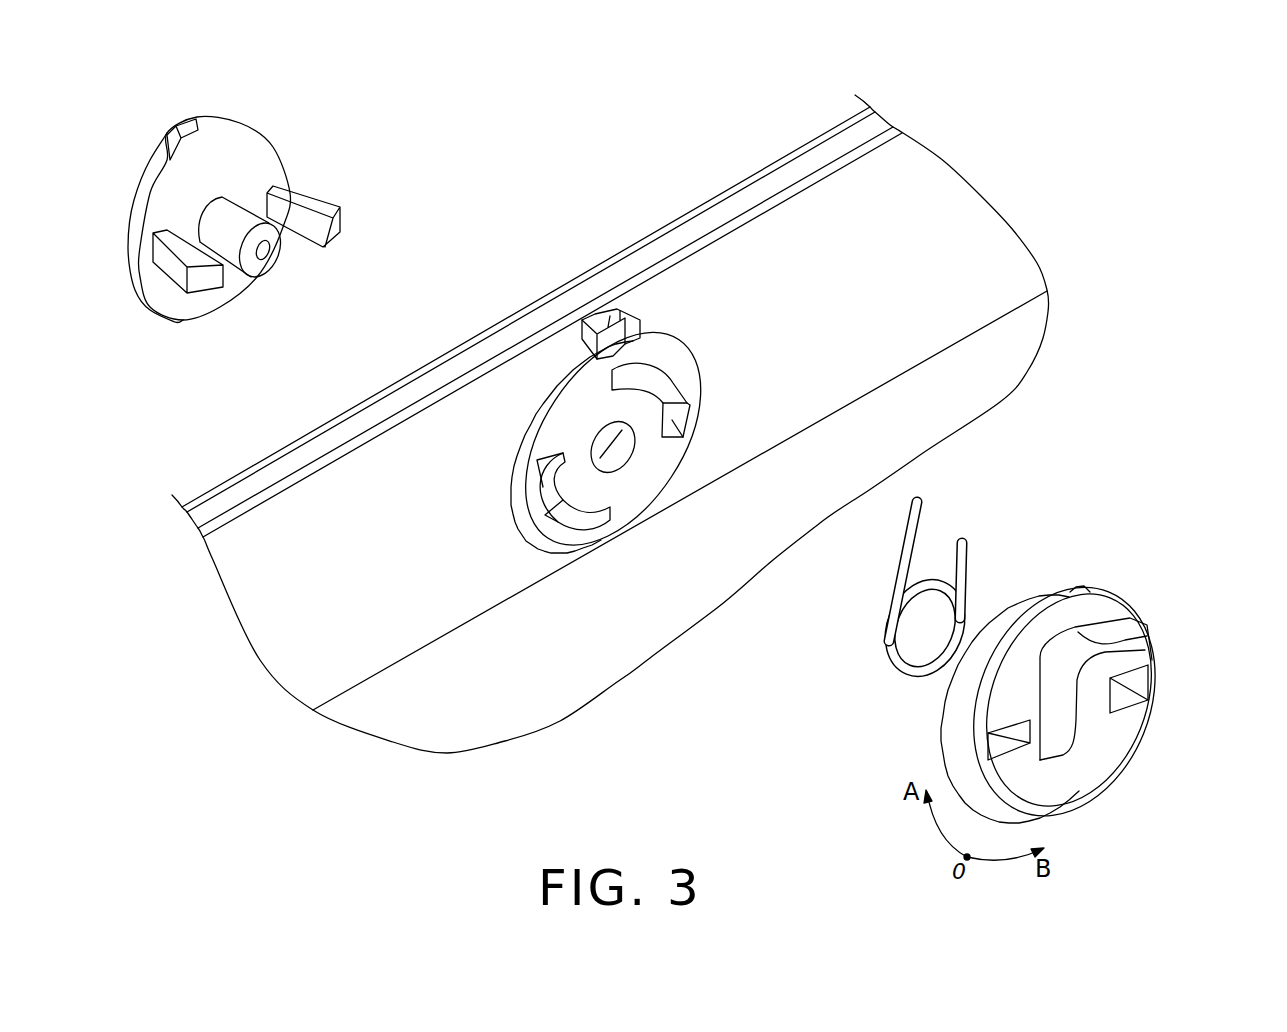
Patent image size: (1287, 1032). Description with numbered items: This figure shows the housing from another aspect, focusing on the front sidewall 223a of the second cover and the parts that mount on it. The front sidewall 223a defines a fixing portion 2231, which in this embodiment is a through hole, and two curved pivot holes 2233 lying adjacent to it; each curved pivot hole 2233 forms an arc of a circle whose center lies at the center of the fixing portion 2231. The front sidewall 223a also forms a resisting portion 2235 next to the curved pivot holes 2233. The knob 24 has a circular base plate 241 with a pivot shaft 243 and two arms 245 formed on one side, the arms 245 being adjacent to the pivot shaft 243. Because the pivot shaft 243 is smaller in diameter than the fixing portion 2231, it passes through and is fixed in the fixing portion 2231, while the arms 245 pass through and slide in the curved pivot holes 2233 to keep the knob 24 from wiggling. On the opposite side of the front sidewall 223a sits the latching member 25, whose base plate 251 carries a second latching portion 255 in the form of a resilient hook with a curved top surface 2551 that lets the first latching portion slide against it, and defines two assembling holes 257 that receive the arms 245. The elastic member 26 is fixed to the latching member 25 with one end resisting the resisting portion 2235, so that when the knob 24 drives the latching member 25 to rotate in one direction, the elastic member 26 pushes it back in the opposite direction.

The front sidewall 223a is at (940, 243).
The fixing portion 2231 is at (636, 490).
The curved pivot holes 2233 is at (690, 410).
The resisting portion 2235 is at (612, 310).
The knob 24 is at (239, 194).
The circular base plate 241 is at (230, 123).
The pivot shaft 243 is at (220, 225).
The arms 245 is at (330, 210).
The latching member 25 is at (1100, 688).
The base plate 251 is at (1022, 617).
The second latching portion 255 is at (1123, 657).
The top surface 2551 is at (1088, 627).
The assembling holes 257 is at (1137, 683).
The elastic member 26 is at (960, 568).